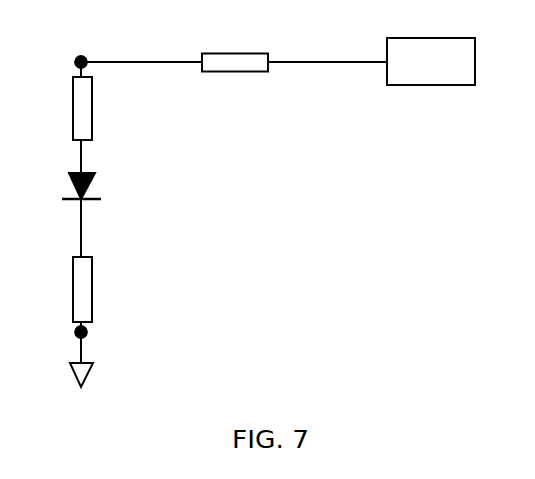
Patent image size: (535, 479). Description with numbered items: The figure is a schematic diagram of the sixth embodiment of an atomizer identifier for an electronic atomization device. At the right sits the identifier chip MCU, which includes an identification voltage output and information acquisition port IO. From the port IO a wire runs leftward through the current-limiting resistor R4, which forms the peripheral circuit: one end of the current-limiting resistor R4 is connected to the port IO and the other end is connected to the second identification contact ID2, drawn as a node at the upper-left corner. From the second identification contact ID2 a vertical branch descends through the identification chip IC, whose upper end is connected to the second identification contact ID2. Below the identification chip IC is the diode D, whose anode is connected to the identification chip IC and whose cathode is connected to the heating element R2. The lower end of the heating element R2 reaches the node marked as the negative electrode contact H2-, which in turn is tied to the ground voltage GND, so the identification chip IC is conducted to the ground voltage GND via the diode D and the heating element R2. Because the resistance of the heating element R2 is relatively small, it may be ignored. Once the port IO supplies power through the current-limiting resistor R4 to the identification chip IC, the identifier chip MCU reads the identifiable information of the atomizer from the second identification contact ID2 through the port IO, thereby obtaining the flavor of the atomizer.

The current-limiting resistor R4 is at (235, 44).
The identifier chip MCU is at (431, 61).
The identification voltage output and information acquisition port IO is at (343, 80).
The identification chip IC is at (62, 108).
The second identification contact ID2 is at (88, 66).
The diode D is at (96, 190).
The heating element R2 is at (66, 289).
The negative electrode contact H2- is at (87, 336).
The ground voltage GND is at (107, 383).